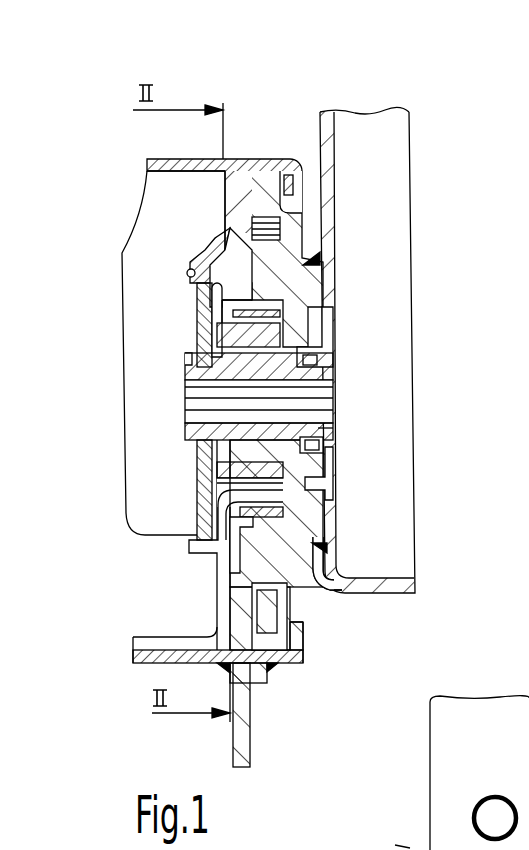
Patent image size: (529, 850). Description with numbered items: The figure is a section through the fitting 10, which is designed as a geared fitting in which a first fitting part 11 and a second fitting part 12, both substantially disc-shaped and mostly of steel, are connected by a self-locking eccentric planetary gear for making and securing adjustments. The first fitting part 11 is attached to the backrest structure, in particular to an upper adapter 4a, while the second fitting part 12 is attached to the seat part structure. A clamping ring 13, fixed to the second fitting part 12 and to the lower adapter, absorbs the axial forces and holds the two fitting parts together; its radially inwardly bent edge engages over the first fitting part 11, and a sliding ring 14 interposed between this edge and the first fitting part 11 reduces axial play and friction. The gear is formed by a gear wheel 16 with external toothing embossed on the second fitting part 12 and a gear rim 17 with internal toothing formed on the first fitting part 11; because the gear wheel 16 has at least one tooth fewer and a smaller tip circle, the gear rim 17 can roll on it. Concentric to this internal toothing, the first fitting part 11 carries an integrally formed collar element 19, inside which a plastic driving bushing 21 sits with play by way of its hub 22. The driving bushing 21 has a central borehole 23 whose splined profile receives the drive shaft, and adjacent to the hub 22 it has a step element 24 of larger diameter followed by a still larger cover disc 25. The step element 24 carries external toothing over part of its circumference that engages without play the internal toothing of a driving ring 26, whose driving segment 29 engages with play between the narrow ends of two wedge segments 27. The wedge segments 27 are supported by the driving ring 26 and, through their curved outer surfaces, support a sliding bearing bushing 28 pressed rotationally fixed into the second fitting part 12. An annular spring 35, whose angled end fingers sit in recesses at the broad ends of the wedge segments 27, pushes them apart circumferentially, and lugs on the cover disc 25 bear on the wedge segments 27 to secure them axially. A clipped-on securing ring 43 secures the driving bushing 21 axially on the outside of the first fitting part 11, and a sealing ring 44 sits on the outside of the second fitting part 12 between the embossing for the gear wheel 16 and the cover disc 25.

The fitting 10 is at (198, 70).
The upper adapter 4a is at (322, 168).
The clamping ring 13 is at (247, 158).
The sliding ring 14 is at (287, 172).
The gear rim 17 is at (227, 215).
The gear wheel 16 is at (258, 229).
The sealing ring 44 is at (193, 252).
The sliding bearing bushing 28 is at (212, 305).
The cover disc 25 is at (217, 340).
The securing ring 43 is at (320, 353).
The driving bushing 21 is at (178, 375).
The borehole 23 is at (298, 408).
The hub 22 is at (337, 428).
The step element 24 is at (190, 440).
The collar element 19 is at (327, 453).
The driving ring 26 is at (192, 476).
The wedge segments 27 is at (330, 482).
The annular spring 35 is at (200, 525).
The second fitting part 12 is at (250, 624).
The first fitting part 11 is at (308, 578).
The driving segment 29 is at (395, 845).